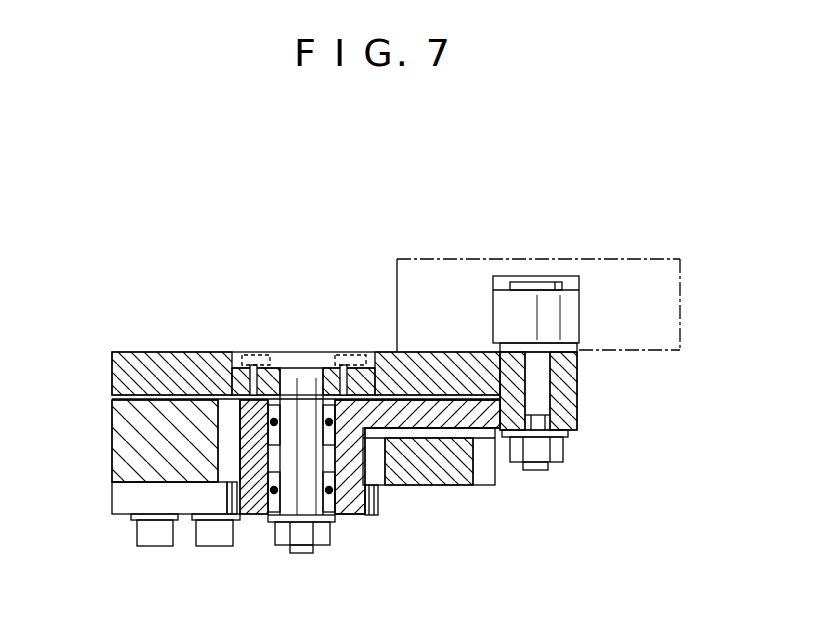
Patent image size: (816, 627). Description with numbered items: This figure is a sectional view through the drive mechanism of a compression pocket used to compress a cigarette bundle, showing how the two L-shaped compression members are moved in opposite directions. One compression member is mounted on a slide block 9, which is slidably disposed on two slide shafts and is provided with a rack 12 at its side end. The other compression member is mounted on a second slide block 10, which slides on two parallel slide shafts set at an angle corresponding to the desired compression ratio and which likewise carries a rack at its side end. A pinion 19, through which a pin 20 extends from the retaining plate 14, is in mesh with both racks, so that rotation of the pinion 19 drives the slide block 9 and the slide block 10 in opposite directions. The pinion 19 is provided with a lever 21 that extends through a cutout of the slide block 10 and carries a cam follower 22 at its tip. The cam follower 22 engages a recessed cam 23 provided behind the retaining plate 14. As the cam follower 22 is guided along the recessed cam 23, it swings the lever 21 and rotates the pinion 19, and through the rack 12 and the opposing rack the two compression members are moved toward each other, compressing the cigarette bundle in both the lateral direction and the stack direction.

The slide block 9 is at (120, 432).
The slide block 10 is at (445, 462).
The rack 12 is at (123, 505).
The retaining plate 14 is at (120, 368).
The pinion 19 is at (353, 500).
The pin 20 is at (290, 385).
The lever 21 is at (480, 415).
The cam follower 22 is at (500, 305).
The recessed cam 23 is at (628, 275).